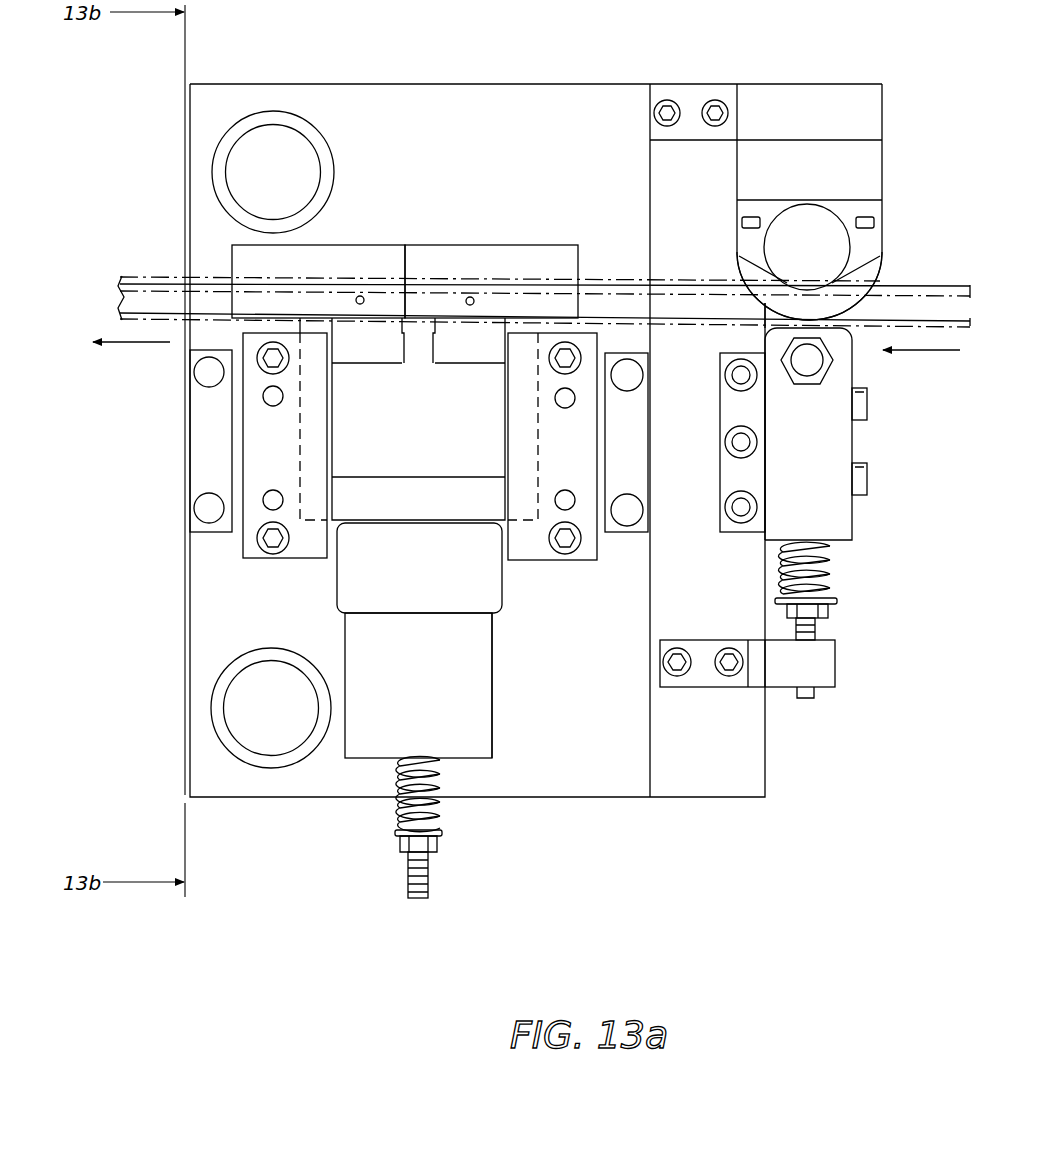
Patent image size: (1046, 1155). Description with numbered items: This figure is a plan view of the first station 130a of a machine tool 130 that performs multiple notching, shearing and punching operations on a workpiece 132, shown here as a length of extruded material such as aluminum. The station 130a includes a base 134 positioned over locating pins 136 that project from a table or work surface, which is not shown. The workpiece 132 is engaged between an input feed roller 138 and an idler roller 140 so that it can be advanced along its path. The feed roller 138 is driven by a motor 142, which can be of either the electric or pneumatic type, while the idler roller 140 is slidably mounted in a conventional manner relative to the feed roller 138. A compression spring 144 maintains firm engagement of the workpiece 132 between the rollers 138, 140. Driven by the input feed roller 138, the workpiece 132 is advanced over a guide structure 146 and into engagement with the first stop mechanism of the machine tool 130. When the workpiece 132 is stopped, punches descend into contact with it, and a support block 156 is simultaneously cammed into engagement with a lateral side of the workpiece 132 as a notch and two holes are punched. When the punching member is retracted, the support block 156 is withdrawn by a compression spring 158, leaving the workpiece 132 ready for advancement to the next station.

The machine tool 130 is at (486, 73).
The first station 130a is at (600, 83).
The workpiece 132 is at (917, 283).
The base 134 is at (565, 143).
The locating pins 136 is at (305, 176).
The input feed roller 138 is at (747, 272).
The idler roller 140 is at (775, 318).
The motor 142 is at (832, 252).
The compression spring 144 is at (827, 565).
The guide structure 146 is at (317, 257).
The support block 156 is at (432, 437).
The compression spring 158 is at (438, 817).